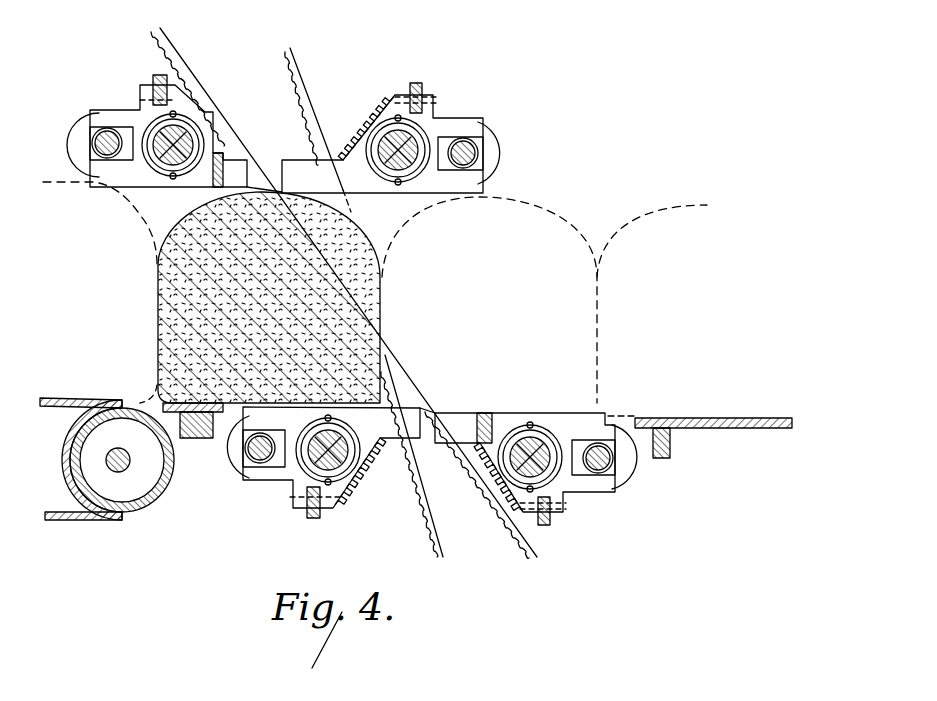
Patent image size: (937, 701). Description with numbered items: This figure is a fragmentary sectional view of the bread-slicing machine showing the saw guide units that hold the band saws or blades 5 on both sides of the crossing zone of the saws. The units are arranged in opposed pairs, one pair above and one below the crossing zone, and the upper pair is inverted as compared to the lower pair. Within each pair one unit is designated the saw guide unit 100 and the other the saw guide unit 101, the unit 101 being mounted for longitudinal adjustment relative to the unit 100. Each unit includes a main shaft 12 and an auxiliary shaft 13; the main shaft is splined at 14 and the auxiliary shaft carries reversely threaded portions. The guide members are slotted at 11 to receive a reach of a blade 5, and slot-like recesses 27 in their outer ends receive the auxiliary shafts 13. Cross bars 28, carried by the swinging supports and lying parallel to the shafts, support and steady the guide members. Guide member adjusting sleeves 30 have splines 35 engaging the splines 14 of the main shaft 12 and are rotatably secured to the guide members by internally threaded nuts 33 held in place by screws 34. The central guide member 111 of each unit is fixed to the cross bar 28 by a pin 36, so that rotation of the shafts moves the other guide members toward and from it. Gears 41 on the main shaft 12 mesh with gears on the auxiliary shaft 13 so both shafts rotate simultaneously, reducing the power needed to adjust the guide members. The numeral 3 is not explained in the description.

The pad block 3 is at (347, 323).
The band saws or blades 5 is at (302, 98).
The slot 11 is at (237, 177).
The main shaft 12 is at (167, 143).
The auxiliary shaft 13 is at (107, 143).
The splines 14 is at (352, 465).
The slot-like recesses 27 is at (90, 133).
The cross bars 28 is at (155, 77).
The guide member adjusting sleeves 30 is at (557, 442).
The internally threaded nuts 33 is at (513, 433).
The screws 34 is at (531, 421).
The splines 35 is at (343, 460).
The pin 36 is at (337, 512).
The gears 41 is at (363, 123).
The saw guide unit 100 is at (380, 97).
The saw guide unit 101 is at (190, 108).
The central guide member 111 is at (137, 177).